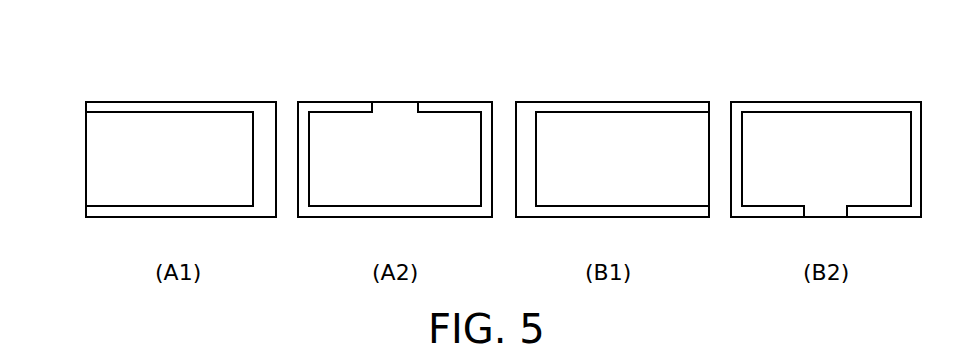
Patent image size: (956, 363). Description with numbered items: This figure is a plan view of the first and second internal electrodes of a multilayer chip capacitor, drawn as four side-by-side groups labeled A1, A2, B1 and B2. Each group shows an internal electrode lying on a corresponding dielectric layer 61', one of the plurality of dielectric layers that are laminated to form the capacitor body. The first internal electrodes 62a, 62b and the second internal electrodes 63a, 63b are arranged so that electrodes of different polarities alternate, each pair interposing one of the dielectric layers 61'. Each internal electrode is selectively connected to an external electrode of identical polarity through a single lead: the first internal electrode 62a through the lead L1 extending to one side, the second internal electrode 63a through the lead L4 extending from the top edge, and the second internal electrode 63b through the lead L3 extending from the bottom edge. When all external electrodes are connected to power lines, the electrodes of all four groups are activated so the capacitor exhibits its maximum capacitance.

The dielectric layer 61' is at (501, 193).
The first internal electrode 62a is at (151, 125).
The first internal electrode 62b is at (573, 125).
The second internal electrode 63a is at (329, 127).
The second internal electrode 63b is at (796, 125).
The lead L1 is at (86, 131).
The lead L3 is at (833, 211).
The lead L4 is at (392, 108).